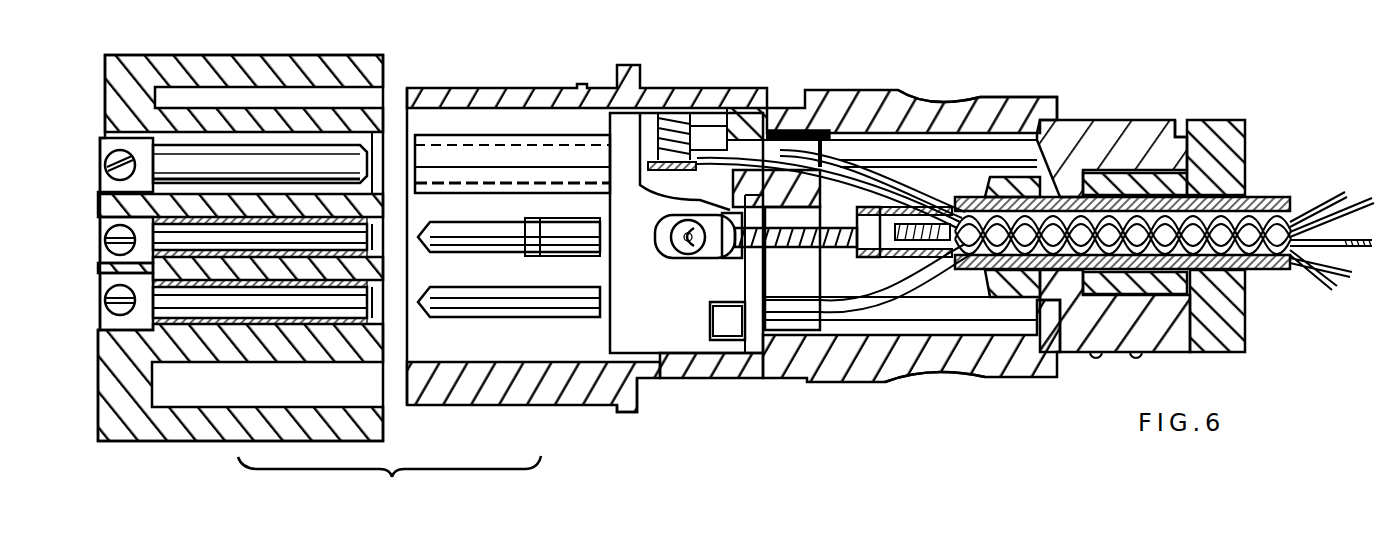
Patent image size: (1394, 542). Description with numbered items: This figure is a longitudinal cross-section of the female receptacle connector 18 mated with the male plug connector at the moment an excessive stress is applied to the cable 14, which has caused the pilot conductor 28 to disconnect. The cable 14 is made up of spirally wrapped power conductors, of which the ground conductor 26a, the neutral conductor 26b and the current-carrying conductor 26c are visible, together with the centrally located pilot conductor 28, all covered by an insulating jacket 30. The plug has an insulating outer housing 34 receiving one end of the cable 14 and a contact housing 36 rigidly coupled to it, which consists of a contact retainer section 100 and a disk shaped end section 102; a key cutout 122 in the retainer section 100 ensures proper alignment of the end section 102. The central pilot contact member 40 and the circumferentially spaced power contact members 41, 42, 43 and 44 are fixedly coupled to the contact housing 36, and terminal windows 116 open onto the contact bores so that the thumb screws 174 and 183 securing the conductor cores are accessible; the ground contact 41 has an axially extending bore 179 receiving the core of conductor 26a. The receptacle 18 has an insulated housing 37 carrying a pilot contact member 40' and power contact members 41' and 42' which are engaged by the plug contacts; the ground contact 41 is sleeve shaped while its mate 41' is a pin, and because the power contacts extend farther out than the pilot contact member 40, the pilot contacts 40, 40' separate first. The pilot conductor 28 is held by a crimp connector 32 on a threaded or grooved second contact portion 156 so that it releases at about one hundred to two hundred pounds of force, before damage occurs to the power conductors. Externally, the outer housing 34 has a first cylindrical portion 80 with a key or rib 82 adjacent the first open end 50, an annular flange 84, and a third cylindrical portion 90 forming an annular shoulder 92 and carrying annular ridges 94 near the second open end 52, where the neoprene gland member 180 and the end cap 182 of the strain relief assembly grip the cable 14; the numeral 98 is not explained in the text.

The cable 14 is at (1262, 196).
The female (receptacle) connector 18 is at (138, 52).
The power conductor (ground) 26a is at (746, 110).
The power conductor (neutral line) 26b is at (857, 355).
The power conductor (current-carrying) 26c is at (843, 188).
The pilot conductor 28 is at (1340, 262).
The insulating jacket 30 is at (1262, 272).
The crimp connector 32 is at (905, 270).
The outer housing 34 is at (826, 76).
The contact housing 36 is at (600, 340).
The insulated housing 37 is at (222, 55).
The pilot contact member 40 is at (505, 239).
The pilot contact member 40' is at (301, 221).
The power contact member (ground contact) 41 is at (512, 150).
The power contact member (ground contact) 41' is at (301, 145).
The power contact member 42 is at (509, 287).
The power contact member 42' is at (301, 317).
The power contact member 43 is at (445, 253).
The power contact member 44 is at (585, 258).
The first open end 50 is at (418, 74).
The second open end 52 is at (1184, 110).
The first substantially cylindrical portion 80 is at (512, 88).
The key or rib 82 is at (466, 440).
The annular flange 84 is at (622, 414).
The third substantially cylindrical portion 90 is at (1148, 120).
The annular shoulder 92 is at (1055, 100).
The annular ridges 94 is at (1090, 120).
The groove 98 is at (925, 97).
The contact retainer section 100 is at (668, 378).
The end section 102 is at (757, 378).
The terminal windows 116 is at (708, 126).
The key cutout 122 is at (712, 320).
The second contact portion 156 is at (796, 268).
The thumb screw 174 is at (690, 260).
The axially extending bore 179 is at (712, 334).
The gland or grommet member 180 is at (1060, 352).
The end cap 182 is at (1218, 120).
The thumb screw 183 is at (658, 113).